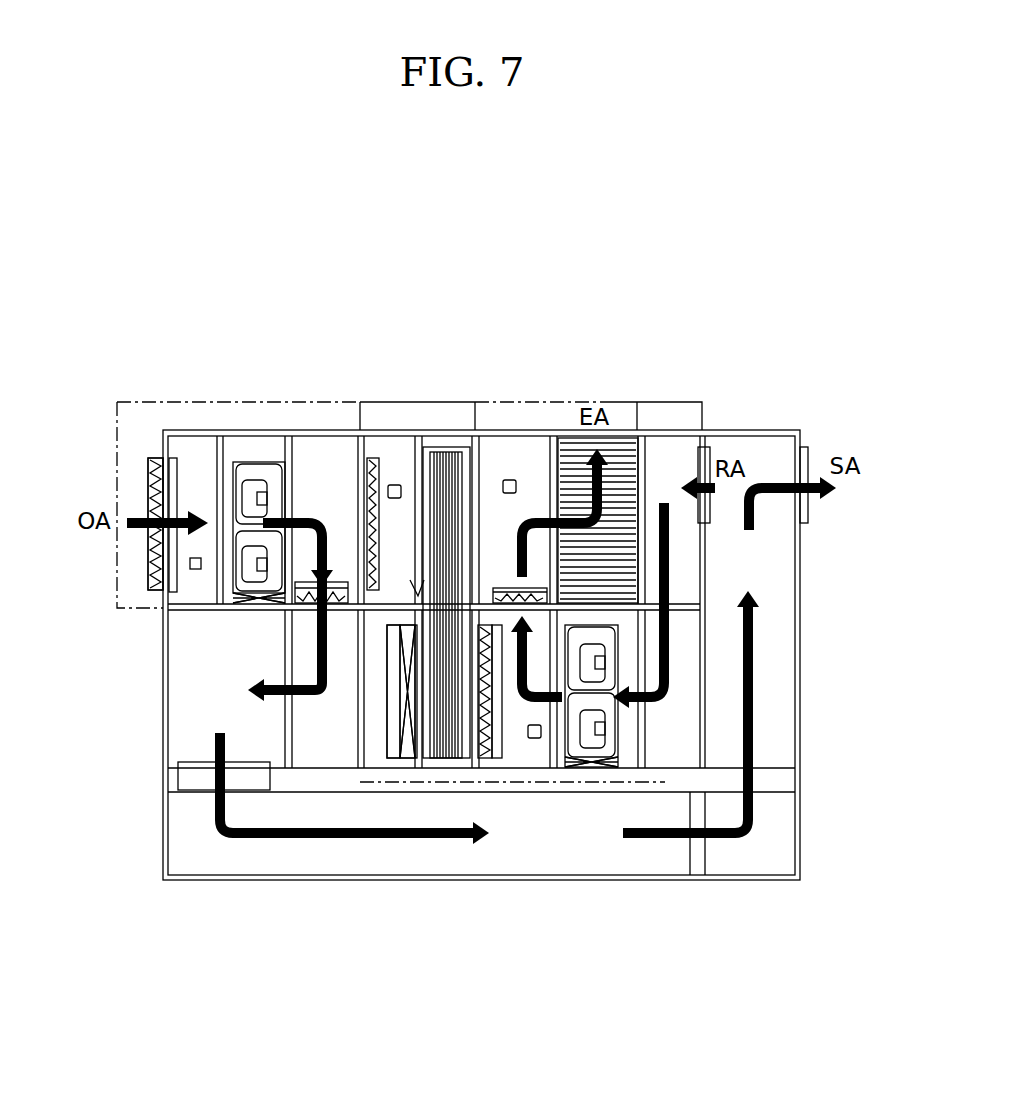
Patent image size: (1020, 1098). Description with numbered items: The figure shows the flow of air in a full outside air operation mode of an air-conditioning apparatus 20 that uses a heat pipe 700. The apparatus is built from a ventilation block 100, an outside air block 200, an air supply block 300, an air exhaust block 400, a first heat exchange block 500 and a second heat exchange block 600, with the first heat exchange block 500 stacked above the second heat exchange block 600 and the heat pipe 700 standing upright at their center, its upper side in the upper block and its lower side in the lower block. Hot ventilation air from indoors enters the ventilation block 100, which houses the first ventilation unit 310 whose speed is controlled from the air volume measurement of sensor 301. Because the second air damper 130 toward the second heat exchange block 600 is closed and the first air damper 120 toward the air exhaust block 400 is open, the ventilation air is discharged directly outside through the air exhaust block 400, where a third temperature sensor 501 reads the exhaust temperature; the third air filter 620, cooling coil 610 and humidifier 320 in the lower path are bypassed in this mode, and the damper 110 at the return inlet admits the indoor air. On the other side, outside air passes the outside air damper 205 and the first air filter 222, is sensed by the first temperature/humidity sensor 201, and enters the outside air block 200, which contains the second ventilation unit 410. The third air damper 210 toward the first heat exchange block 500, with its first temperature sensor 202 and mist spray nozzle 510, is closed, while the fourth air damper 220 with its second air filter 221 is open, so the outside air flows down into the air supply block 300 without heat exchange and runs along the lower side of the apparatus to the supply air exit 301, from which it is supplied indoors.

The air-conditioning apparatus 20 is at (660, 256).
The ventilation block 100 is at (667, 453).
The return air damper 110 is at (707, 460).
The first air damper 120 is at (508, 478).
The second air damper 130 is at (495, 738).
The outside air block 200 is at (197, 455).
The first temperature/humidity sensor 201 is at (150, 573).
The first temperature sensor 202 is at (393, 482).
The outside air damper 205 is at (150, 478).
The third air damper 210 is at (376, 456).
The fourth air damper 220 is at (280, 598).
The second air filter 221 is at (300, 578).
The first air filter 222 is at (170, 447).
The air supply block 300 is at (770, 700).
The supply air exit / first air volume measurement sensor 301 is at (808, 554).
The first ventilation unit 310 is at (597, 752).
The humidifier 320 is at (393, 740).
The air exhaust block 400 is at (530, 465).
The second ventilation unit 410 is at (250, 482).
The first heat exchange block 500 is at (413, 458).
The third temperature sensor 501 is at (513, 586).
The mist spray nozzle 510 is at (416, 588).
The second heat exchange block 600 is at (380, 730).
The cooling coil 610 is at (407, 743).
The third air filter 620 is at (590, 752).
The heat pipe 700 is at (443, 747).